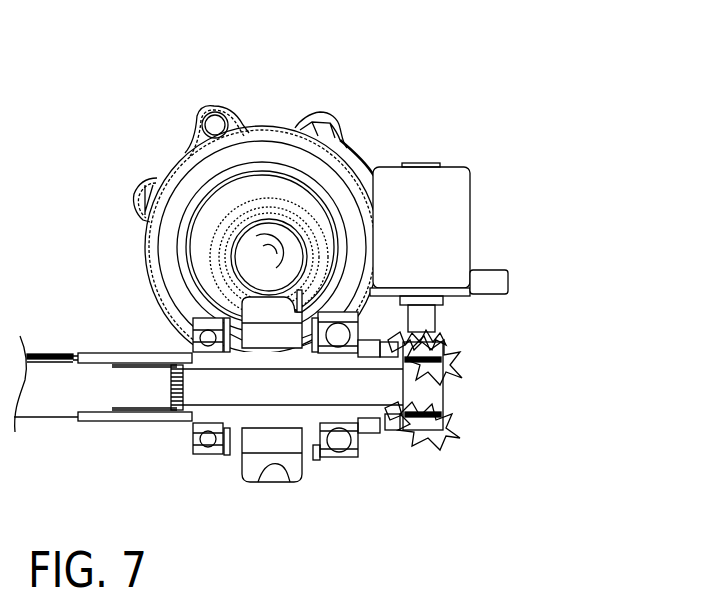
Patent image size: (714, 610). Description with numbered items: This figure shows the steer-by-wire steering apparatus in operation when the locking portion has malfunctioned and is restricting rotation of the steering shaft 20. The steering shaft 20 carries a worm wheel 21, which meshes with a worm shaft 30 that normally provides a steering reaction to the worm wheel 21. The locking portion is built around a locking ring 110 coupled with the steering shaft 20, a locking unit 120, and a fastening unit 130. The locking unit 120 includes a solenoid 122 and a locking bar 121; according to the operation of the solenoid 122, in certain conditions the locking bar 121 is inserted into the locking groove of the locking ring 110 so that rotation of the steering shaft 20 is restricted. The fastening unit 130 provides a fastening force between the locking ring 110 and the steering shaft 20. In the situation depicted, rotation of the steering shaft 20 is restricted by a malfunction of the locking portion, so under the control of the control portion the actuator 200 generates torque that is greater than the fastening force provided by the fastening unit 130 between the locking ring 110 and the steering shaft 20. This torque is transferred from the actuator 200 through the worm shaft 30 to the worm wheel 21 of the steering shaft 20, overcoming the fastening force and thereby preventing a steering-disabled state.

The actuator 200 is at (268, 128).
The worm shaft 30 is at (268, 262).
The steering shaft 20 is at (52, 410).
The worm wheel 21 is at (291, 478).
The locking unit 120 is at (494, 256).
The locking bar 121 is at (413, 332).
The solenoid 122 is at (457, 233).
The fastening unit 130 is at (437, 406).
The locking ring 110 is at (447, 425).